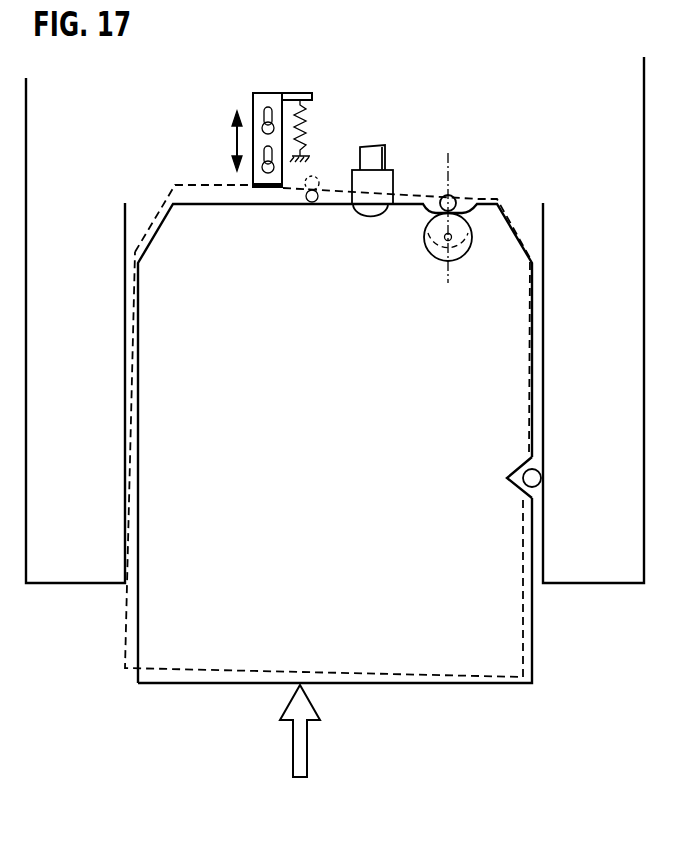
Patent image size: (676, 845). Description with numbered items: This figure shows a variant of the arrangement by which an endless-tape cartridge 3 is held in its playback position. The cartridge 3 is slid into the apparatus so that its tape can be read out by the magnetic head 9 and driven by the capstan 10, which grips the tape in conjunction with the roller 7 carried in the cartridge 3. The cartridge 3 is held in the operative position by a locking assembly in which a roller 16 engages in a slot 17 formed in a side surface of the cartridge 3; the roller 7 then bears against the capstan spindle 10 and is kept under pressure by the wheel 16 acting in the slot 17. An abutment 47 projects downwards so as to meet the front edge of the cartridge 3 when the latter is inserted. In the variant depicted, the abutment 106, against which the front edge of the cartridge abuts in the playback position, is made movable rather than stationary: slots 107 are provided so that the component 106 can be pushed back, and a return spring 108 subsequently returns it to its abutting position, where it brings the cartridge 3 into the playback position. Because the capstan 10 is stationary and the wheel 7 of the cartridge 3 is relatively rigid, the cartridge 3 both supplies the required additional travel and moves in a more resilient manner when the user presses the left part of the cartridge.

The cartridge 3 is at (505, 638).
The roller 7 is at (463, 240).
The magnetic head 9 is at (378, 182).
The capstan 10 is at (457, 200).
The roller 16 is at (541, 478).
The slot 17 is at (514, 484).
The abutment 47 is at (316, 204).
The abutment 106 is at (254, 196).
The slots 107 is at (266, 112).
The return spring 108 is at (300, 118).